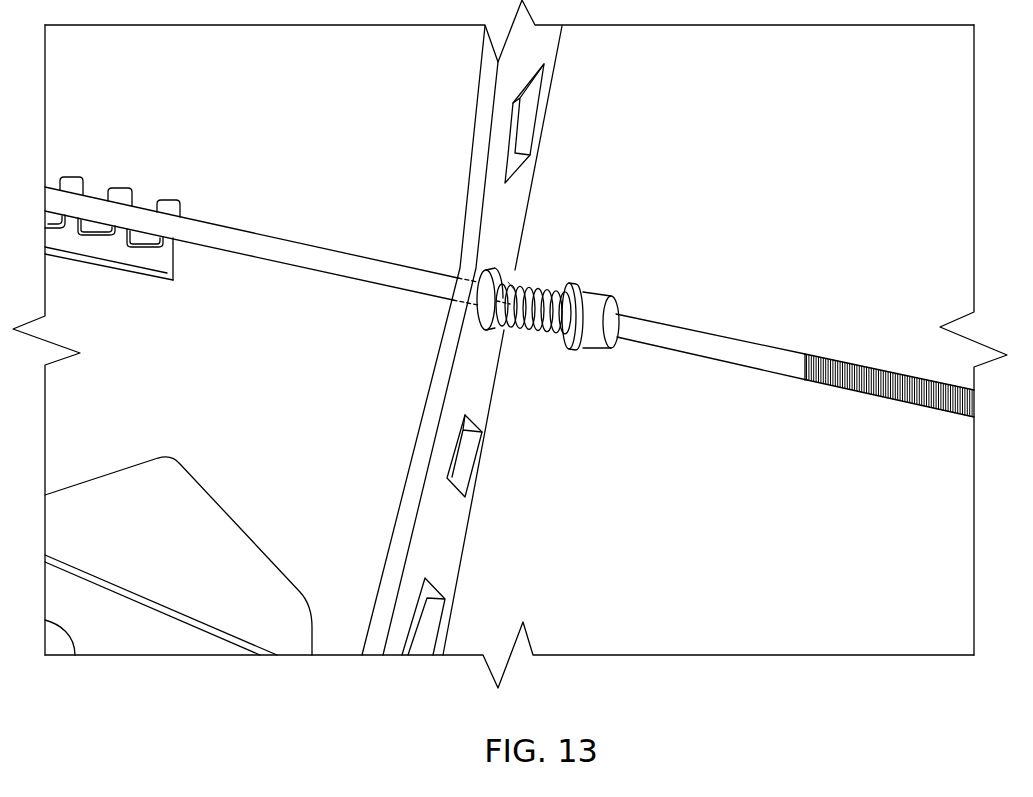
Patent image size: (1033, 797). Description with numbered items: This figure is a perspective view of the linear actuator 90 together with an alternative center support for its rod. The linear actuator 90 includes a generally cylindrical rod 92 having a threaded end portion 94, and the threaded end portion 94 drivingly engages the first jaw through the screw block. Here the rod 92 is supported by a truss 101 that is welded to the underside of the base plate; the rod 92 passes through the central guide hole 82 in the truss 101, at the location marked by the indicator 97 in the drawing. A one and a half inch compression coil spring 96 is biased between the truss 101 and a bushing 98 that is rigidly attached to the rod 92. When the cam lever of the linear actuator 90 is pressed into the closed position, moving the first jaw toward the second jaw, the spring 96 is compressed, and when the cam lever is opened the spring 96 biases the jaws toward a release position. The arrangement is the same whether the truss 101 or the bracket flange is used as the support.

The truss 101 is at (488, 99).
The actuator guide hole 82 is at (494, 322).
The compression coil spring 96 is at (551, 292).
The aperture 97 is at (507, 282).
The bushing 98 is at (592, 330).
The linear actuator 90 is at (795, 349).
The rod 92 is at (712, 358).
The threaded end portion 94 is at (812, 382).